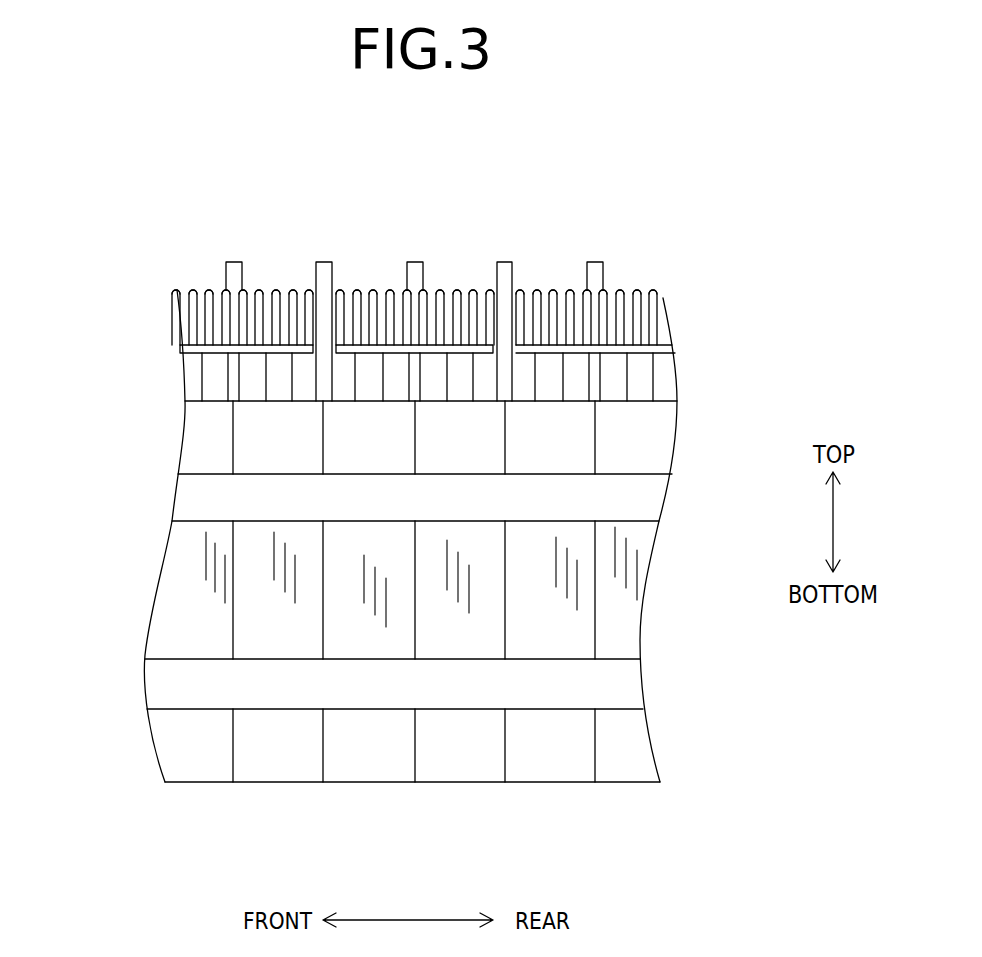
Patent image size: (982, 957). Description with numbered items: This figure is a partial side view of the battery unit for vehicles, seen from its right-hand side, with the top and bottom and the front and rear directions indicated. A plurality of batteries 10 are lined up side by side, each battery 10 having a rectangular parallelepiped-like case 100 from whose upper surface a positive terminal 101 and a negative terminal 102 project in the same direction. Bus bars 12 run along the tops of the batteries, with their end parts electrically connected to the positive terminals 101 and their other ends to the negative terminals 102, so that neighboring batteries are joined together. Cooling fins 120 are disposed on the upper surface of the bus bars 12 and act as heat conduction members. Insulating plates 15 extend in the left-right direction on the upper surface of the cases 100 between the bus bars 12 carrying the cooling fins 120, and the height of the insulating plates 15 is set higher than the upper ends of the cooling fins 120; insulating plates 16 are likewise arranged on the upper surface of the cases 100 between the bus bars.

The battery 10 is at (202, 783).
The bus bar 12 is at (620, 345).
The insulating plate 15 is at (326, 262).
The insulating plate 16 is at (593, 262).
The case 100 is at (358, 612).
The positive terminal 101 is at (277, 388).
The negative terminal 102 is at (188, 382).
The cooling fin 120 is at (555, 290).